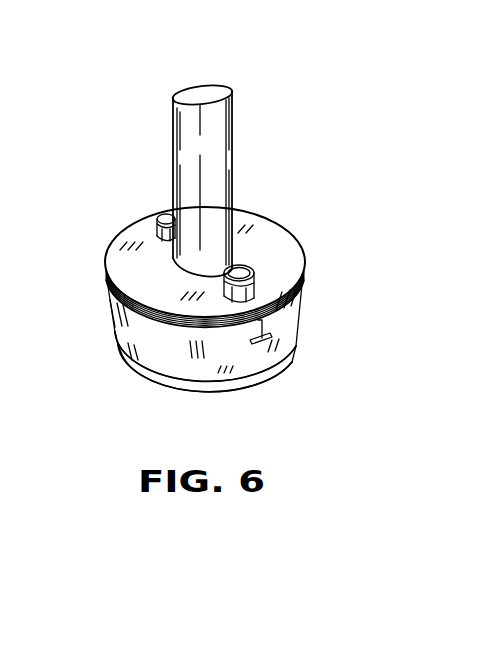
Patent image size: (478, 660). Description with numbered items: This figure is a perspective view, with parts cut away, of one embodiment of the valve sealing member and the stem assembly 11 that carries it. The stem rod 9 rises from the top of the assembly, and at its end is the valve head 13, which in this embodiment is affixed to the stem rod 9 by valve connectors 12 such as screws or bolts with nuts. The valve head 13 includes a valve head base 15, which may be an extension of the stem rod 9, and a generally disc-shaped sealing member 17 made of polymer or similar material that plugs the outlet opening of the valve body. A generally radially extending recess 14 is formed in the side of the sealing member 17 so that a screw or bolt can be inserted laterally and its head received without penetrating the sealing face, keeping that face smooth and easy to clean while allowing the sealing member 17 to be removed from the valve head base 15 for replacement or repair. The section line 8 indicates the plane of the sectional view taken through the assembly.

The stem assembly 11 is at (118, 62).
The valve head 13 is at (78, 233).
The valve head base 15 is at (298, 278).
The sealing member 17 is at (308, 280).
The stem rod 9 is at (212, 113).
The valve connectors 12 is at (252, 272).
The recess 14 is at (262, 343).
The section line 8- 8 is at (122, 217).